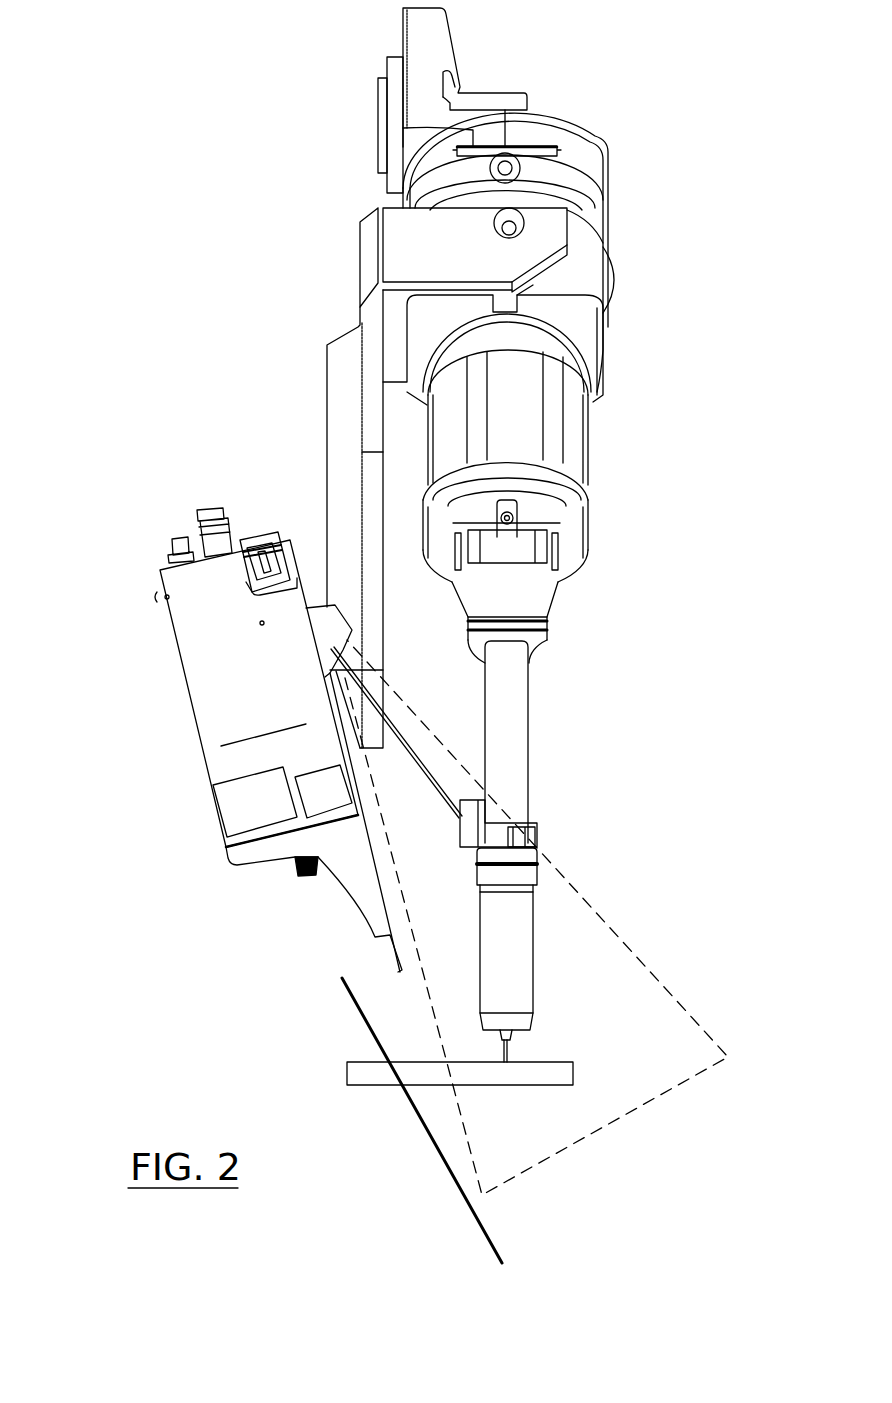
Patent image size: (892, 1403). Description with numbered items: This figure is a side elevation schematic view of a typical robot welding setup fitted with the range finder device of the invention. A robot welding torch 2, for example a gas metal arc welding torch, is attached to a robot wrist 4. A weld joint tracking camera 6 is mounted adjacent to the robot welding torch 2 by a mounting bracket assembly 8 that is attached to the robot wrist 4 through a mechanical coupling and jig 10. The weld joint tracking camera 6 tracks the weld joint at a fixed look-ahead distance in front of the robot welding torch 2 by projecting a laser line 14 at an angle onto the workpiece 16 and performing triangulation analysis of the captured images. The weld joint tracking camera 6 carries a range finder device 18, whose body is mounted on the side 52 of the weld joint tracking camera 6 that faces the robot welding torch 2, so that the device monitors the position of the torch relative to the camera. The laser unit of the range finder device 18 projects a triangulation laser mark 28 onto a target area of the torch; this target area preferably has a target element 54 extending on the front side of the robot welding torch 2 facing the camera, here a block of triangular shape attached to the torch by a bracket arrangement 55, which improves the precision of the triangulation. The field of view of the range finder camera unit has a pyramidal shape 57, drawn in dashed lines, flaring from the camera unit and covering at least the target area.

The robot welding torch 2 is at (558, 950).
The robot wrist 4 is at (527, 62).
The weld joint tracking camera 6 is at (278, 888).
The mounting bracket assembly 8 is at (313, 397).
The mechanical coupling and jig 10 is at (638, 208).
The laser line 14 is at (428, 1133).
The workpiece 16 is at (545, 1083).
The range finder device 18 is at (315, 592).
The triangulation laser mark 28 is at (406, 737).
The side of the weld joint tracking camera 52 is at (358, 802).
The target element 54 is at (468, 823).
The bracket arrangement 55 is at (518, 836).
The pyramidal shape 57 is at (697, 1020).